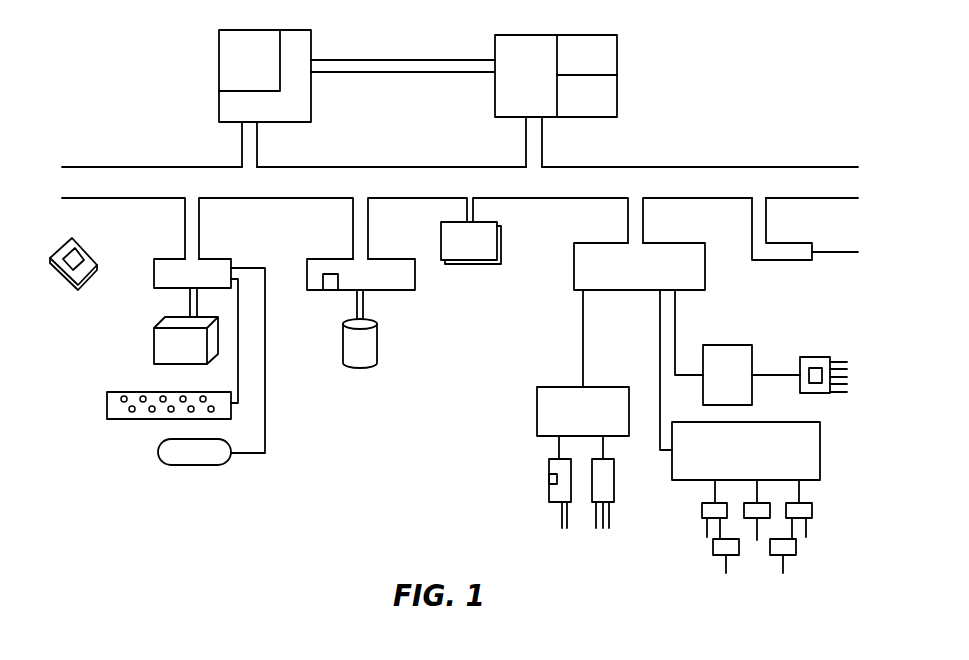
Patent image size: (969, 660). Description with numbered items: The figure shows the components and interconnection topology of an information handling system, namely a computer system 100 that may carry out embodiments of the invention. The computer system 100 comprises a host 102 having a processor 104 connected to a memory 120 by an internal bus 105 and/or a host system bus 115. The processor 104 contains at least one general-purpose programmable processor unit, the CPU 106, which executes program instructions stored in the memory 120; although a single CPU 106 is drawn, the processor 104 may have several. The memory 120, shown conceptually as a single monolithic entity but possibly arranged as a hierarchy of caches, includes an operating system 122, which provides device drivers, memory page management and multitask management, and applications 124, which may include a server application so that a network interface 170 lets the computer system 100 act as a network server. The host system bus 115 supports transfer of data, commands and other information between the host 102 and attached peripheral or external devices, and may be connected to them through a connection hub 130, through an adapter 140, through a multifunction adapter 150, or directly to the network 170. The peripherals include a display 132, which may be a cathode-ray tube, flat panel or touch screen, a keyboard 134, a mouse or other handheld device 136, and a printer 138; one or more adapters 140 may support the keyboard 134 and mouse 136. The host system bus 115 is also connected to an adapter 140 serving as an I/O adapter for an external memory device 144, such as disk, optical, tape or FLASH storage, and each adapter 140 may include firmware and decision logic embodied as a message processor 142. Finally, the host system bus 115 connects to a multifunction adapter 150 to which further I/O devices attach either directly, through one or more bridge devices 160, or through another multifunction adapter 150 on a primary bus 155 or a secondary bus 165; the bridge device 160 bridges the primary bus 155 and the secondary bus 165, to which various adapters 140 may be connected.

The computer system 100 is at (118, 51).
The host 102 is at (761, 84).
The processor 104 is at (219, 107).
The internal bus 105 is at (415, 77).
The general-purpose programmable processor unit (CPU) 106 is at (219, 63).
The host system bus 115 is at (433, 166).
The memory 120 is at (495, 41).
The operating system 122 is at (617, 63).
The applications 124 is at (617, 98).
The connection hub 130 is at (205, 344).
The display 132 is at (163, 319).
The keyboard 134 is at (133, 392).
The mouse 136 is at (168, 465).
The printer 138 is at (58, 241).
The adapter 140 is at (325, 259).
The message processor 142 is at (332, 292).
The external memory device 144 is at (360, 368).
The multifunction adapter 150 is at (837, 462).
The primary bus 155 is at (583, 357).
The bridge device 160 is at (537, 413).
The secondary bus 165 is at (773, 375).
The network interface 170 is at (805, 229).